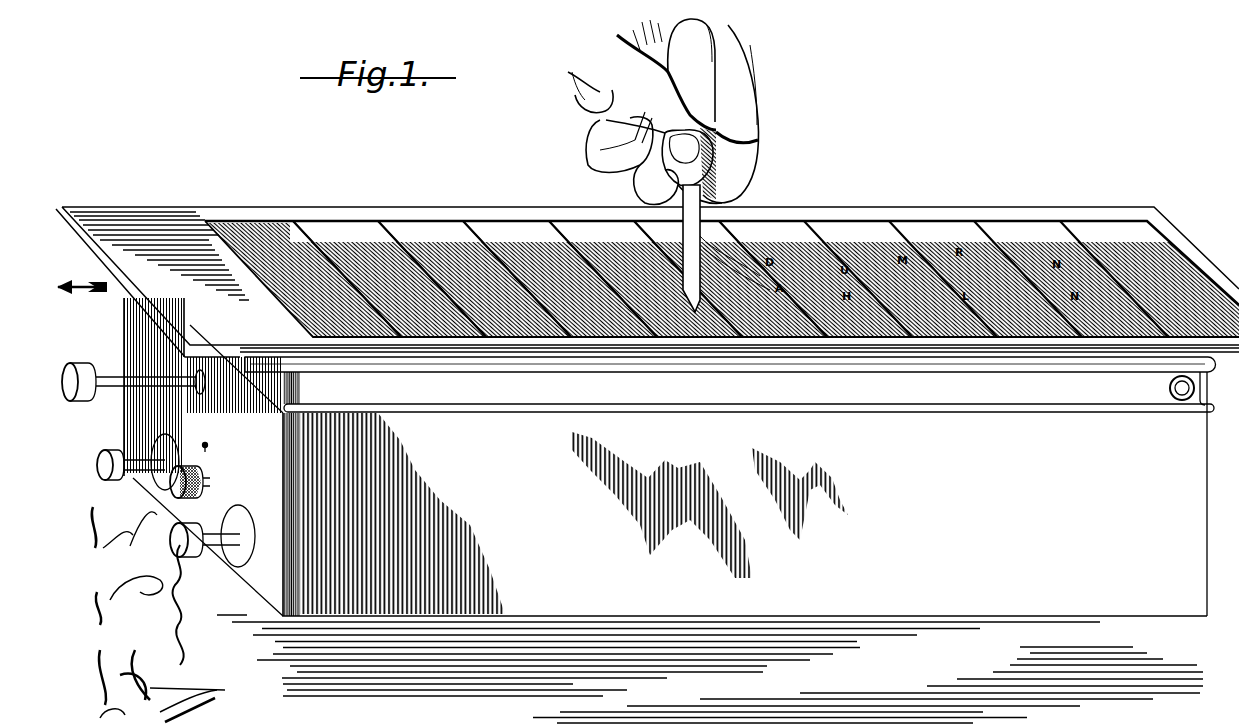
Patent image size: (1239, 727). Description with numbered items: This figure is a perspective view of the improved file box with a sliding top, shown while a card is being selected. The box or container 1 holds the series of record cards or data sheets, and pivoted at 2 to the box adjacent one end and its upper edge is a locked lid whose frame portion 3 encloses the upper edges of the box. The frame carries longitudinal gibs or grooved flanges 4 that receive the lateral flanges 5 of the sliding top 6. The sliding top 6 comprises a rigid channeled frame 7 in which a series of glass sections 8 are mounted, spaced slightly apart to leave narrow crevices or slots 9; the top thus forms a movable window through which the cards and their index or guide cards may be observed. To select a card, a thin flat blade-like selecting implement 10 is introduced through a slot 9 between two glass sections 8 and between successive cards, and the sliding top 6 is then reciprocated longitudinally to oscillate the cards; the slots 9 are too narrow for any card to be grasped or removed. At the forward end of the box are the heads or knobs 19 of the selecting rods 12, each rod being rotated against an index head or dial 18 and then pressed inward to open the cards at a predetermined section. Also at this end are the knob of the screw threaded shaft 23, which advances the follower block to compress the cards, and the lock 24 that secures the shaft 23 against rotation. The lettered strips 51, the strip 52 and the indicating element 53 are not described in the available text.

The box or container 1 is at (665, 457).
The pivot 2 is at (1169, 388).
The frame portion 3 is at (730, 379).
The longitudinal gibs or grooved flanges 4 is at (300, 352).
The lateral flanges 5 is at (266, 353).
The sliding top 6 is at (416, 238).
The rigid channeled frame 7 is at (521, 212).
The glass sections 8 is at (531, 238).
The crevices or narrow slots 9 is at (466, 222).
The selecting implement 10 is at (688, 209).
The selecting rod 12 is at (152, 445).
The index head or dial 18 is at (150, 476).
The head or knob 19 is at (176, 540).
The screw threaded shaft 23 is at (208, 486).
The lock 24 is at (207, 445).
The lettered strip 51 is at (848, 226).
The strip 52 is at (785, 237).
The stylus 53 is at (740, 234).